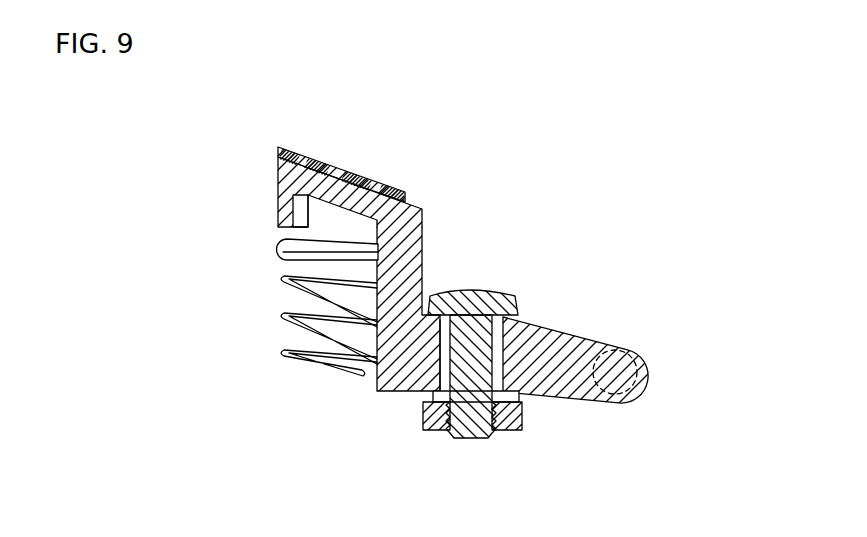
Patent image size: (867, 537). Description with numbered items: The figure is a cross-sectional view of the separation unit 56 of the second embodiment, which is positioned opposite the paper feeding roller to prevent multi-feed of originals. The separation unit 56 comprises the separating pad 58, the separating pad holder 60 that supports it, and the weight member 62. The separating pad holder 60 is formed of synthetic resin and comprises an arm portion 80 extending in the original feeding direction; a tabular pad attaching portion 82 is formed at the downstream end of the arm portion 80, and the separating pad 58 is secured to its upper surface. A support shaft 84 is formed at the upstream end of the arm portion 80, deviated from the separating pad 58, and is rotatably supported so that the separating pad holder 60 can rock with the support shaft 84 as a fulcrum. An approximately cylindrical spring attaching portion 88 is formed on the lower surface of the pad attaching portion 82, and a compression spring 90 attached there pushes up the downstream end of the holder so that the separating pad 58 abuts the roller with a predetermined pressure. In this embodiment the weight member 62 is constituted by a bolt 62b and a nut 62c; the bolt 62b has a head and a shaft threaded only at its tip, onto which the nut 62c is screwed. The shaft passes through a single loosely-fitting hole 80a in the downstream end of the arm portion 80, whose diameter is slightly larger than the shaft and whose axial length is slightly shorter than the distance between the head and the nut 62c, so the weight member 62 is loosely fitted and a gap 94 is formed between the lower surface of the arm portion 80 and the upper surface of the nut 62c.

The separation unit 56 is at (204, 98).
The separating pad 58 is at (365, 183).
The separating pad holder 60 is at (592, 318).
The weight member 62 is at (478, 321).
The bolt 62b is at (497, 300).
The nut 62c is at (510, 432).
The arm portion 80 is at (525, 332).
The loosely-fitting hole 80a is at (444, 372).
The pad attaching portion 82 is at (293, 185).
The support shaft 84 is at (645, 345).
The spring attaching portion 88 is at (287, 234).
The compression spring 90 is at (278, 313).
The gap 94 is at (519, 398).